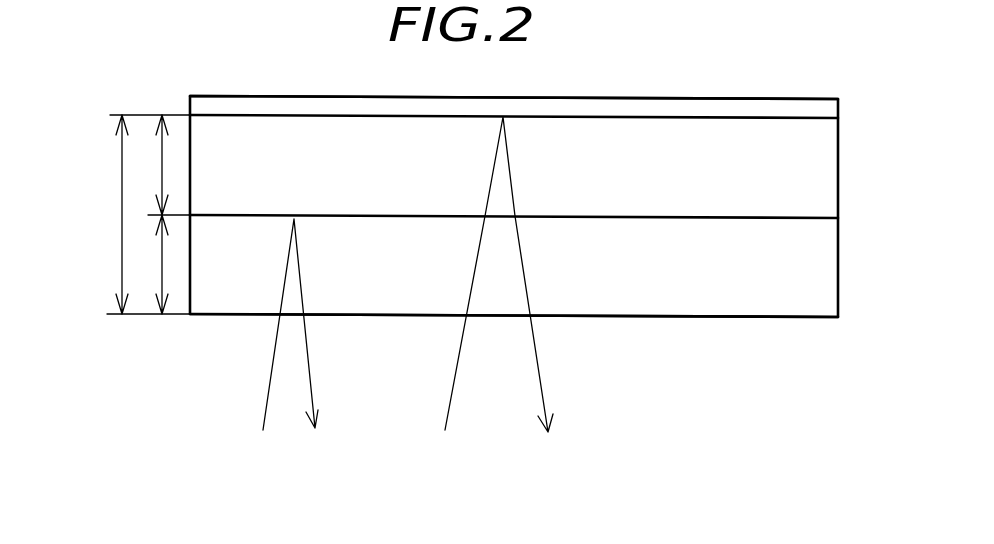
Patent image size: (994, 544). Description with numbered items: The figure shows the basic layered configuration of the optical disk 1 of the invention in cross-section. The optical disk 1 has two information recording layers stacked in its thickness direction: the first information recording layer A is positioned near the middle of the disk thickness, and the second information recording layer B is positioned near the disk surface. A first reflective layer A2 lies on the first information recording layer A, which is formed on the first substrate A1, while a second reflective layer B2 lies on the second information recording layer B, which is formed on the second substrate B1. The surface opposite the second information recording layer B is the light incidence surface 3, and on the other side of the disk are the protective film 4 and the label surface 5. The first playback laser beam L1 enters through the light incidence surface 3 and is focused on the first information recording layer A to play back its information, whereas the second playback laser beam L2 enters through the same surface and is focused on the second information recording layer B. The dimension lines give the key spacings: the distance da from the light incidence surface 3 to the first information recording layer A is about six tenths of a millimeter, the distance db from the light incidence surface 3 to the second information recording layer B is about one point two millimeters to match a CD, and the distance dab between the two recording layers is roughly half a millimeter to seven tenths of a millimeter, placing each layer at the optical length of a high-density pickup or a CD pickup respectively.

The optical disk 1 is at (46, 46).
The light incidence surface 3 is at (812, 318).
The protective film 4 is at (834, 104).
The label surface 5 is at (706, 93).
The first information recording layer A is at (843, 220).
The second information recording layer B is at (848, 118).
The first substrate A1 is at (820, 297).
The first reflective layer A2 is at (817, 222).
The second substrate B1 is at (823, 190).
The second reflective layer B2 is at (802, 123).
The first playback laser beam L1 is at (268, 390).
The second playback laser beam L2 is at (455, 388).
The distance from light incidence surface to first information recording layer da is at (160, 272).
The distance from light incidence surface to second information recording layer db is at (120, 226).
The distance between first and second information recording layers dab is at (160, 160).